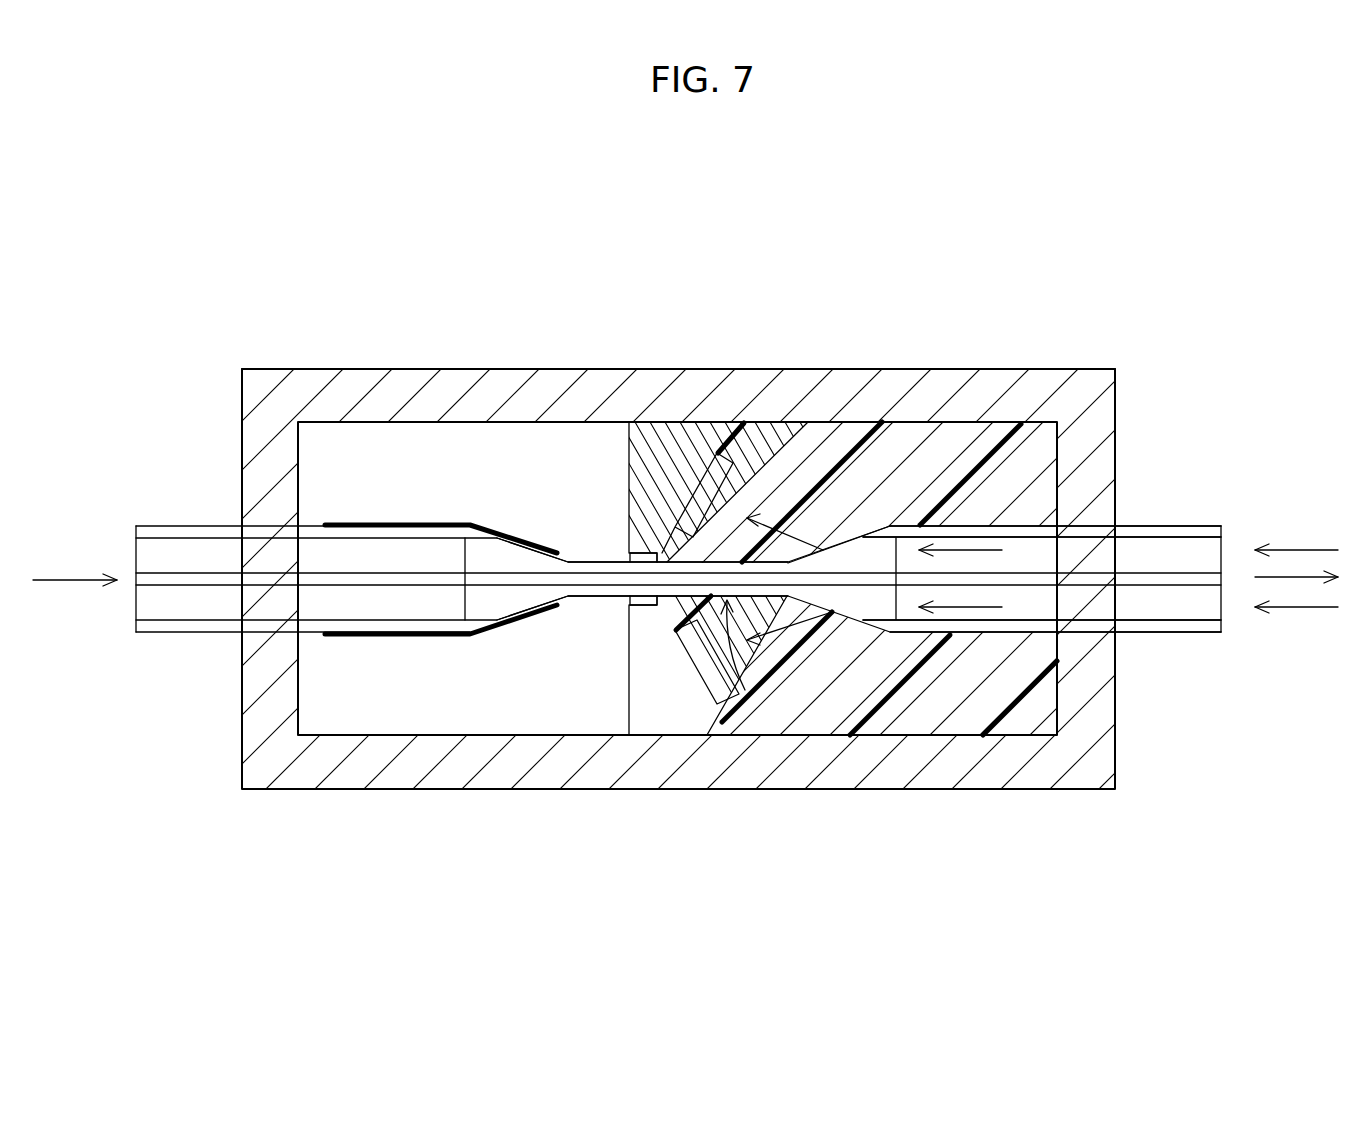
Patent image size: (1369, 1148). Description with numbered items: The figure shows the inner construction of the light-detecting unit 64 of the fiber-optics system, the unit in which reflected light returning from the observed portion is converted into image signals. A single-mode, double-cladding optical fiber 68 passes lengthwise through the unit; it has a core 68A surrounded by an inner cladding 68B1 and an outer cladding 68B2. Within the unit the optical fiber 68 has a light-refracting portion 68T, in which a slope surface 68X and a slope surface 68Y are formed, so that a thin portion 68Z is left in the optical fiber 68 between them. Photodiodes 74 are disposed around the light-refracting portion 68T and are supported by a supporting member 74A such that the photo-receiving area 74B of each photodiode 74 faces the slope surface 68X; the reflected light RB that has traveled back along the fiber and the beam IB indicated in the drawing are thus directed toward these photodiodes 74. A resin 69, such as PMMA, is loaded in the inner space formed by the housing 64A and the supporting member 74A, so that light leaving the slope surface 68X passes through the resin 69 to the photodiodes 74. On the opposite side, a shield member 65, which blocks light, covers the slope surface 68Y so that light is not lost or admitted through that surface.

The light-detecting unit 64 is at (930, 324).
The housing 64A is at (1062, 369).
The shield member 65 is at (503, 632).
The optical fiber 68 is at (1163, 508).
The core 68A is at (1173, 580).
The inner cladding 68B1 is at (1202, 555).
The outer cladding 68B2 is at (1205, 530).
The light-refracting portion 68T is at (730, 660).
The slope surface 68X is at (828, 555).
The slope surface 68Y is at (568, 598).
The thin portion 68Z is at (598, 562).
The resin 69 is at (918, 690).
The photodiodes 74 is at (705, 493).
The supporting member 74A is at (655, 450).
The photo-receiving area 74B is at (722, 490).
The reflected light RB is at (963, 550).
The incident beam IB is at (832, 614).